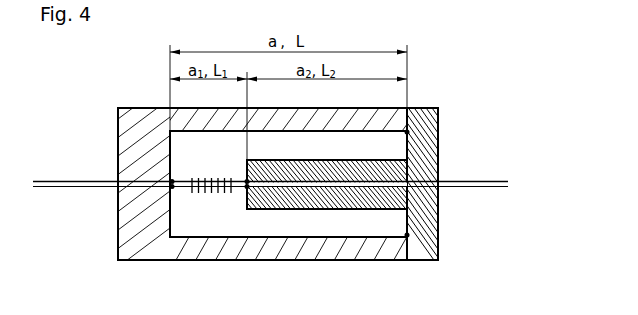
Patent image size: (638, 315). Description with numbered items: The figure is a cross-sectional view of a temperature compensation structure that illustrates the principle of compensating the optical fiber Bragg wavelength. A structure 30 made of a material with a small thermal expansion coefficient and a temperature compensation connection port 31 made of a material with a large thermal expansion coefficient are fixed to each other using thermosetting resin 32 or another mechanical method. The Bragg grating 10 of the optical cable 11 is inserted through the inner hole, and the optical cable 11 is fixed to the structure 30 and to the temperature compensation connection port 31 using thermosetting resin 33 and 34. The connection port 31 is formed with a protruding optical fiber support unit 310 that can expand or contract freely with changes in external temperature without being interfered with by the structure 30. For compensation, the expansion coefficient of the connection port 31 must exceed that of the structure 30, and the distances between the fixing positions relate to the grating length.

The Bragg grating 10 is at (211, 200).
The optical cable 11 is at (93, 177).
The structure 30 is at (115, 129).
The temperature compensation connection port 31 is at (441, 134).
The thermosetting resin 32 is at (407, 237).
The thermosetting resin 33 is at (173, 190).
The thermosetting resin 34 is at (247, 190).
The optical fiber support unit 310 is at (337, 210).